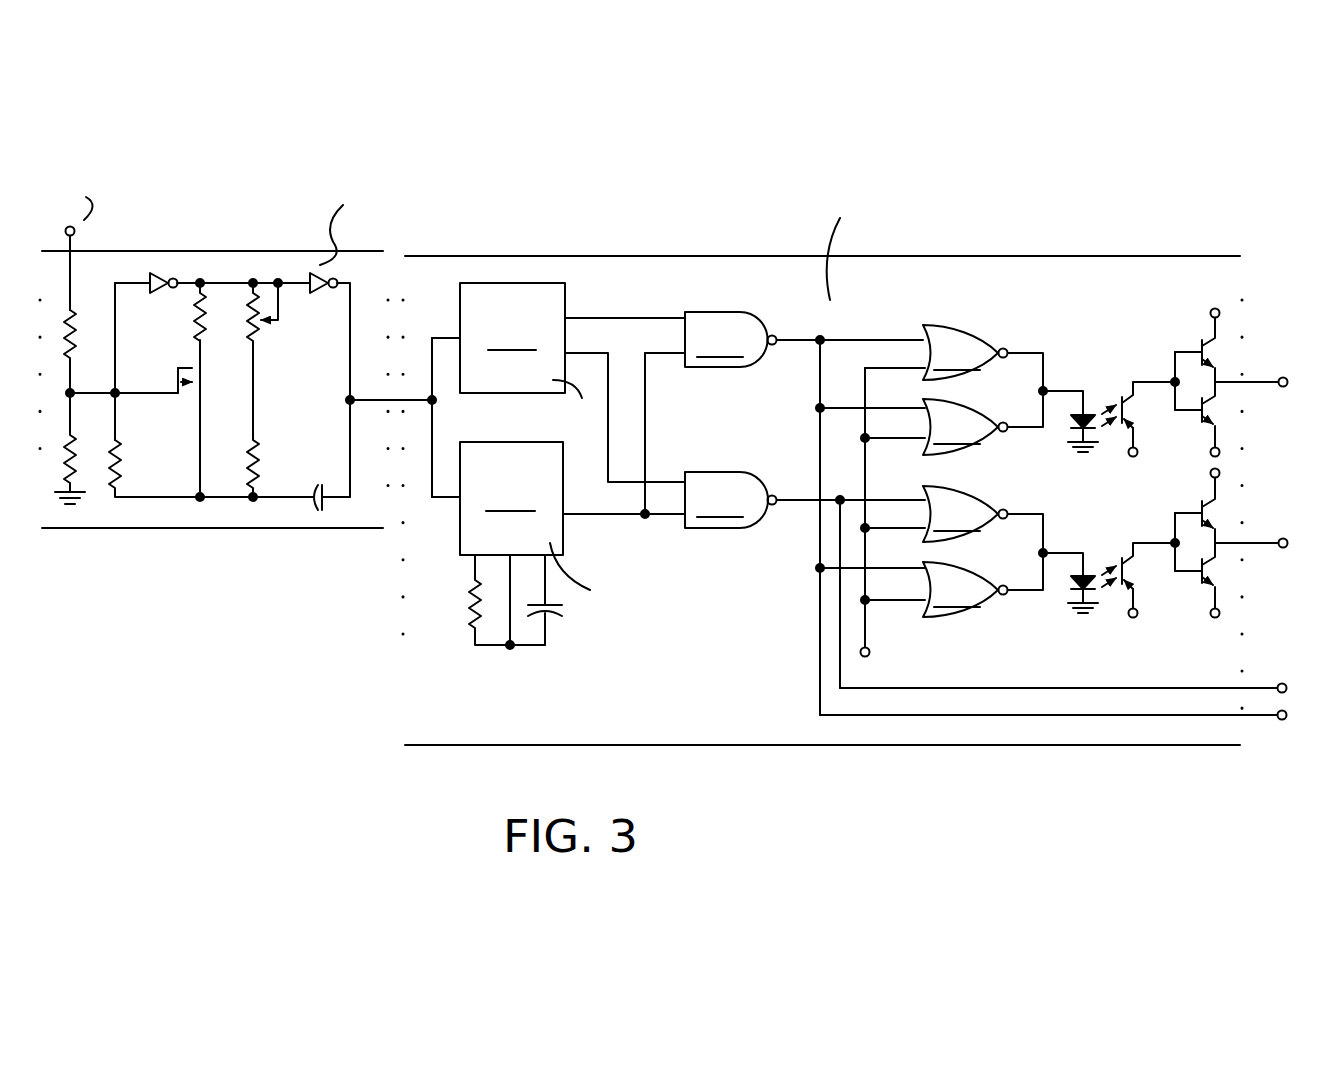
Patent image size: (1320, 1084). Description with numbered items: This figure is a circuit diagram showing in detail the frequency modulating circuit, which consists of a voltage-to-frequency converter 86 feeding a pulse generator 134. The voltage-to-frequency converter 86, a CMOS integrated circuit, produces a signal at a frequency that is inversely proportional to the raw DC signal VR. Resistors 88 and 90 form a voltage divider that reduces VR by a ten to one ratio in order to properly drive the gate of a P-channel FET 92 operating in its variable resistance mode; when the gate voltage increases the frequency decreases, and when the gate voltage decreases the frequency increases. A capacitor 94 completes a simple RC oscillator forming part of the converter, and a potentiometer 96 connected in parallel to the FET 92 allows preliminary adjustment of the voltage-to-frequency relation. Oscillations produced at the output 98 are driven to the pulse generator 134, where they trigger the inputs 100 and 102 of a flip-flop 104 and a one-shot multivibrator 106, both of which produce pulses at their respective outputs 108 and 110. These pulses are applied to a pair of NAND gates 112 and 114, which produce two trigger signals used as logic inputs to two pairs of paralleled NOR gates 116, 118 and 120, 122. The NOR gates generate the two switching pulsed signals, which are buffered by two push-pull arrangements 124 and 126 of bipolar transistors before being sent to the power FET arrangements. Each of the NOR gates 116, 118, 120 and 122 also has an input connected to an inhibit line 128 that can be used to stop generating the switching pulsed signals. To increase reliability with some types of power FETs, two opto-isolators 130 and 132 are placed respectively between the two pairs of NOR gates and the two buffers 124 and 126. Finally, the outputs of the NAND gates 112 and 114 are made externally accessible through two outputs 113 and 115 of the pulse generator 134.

The voltage-to-frequency converter 86 is at (206, 236).
The resistor 88 is at (72, 354).
The resistor 90 is at (73, 446).
The P-channel FET 92 is at (186, 397).
The capacitor 94 is at (312, 497).
The potentiometer 96 is at (256, 322).
The output 98 is at (350, 400).
The input 100 is at (460, 337).
The input 102 is at (456, 500).
The flip-flop 104 is at (505, 390).
The one-shot multivibrator 106 is at (601, 545).
The output 108 is at (567, 320).
The output 110 is at (565, 516).
The NAND gate 112 is at (804, 339).
The output 113 is at (1278, 688).
The NAND gate 114 is at (805, 500).
The output 115 is at (1268, 722).
The NOR gate 116 is at (983, 358).
The NOR gate 118 is at (983, 423).
The NOR gate 120 is at (983, 519).
The NOR gate 122 is at (983, 585).
The push-pull arrangement 124 is at (1196, 323).
The push-pull arrangement 126 is at (1200, 600).
The inhibit line 128 is at (865, 624).
The opto-isolator 130 is at (1094, 380).
The opto-isolator 132 is at (1112, 606).
The pulse generator 134 is at (688, 241).